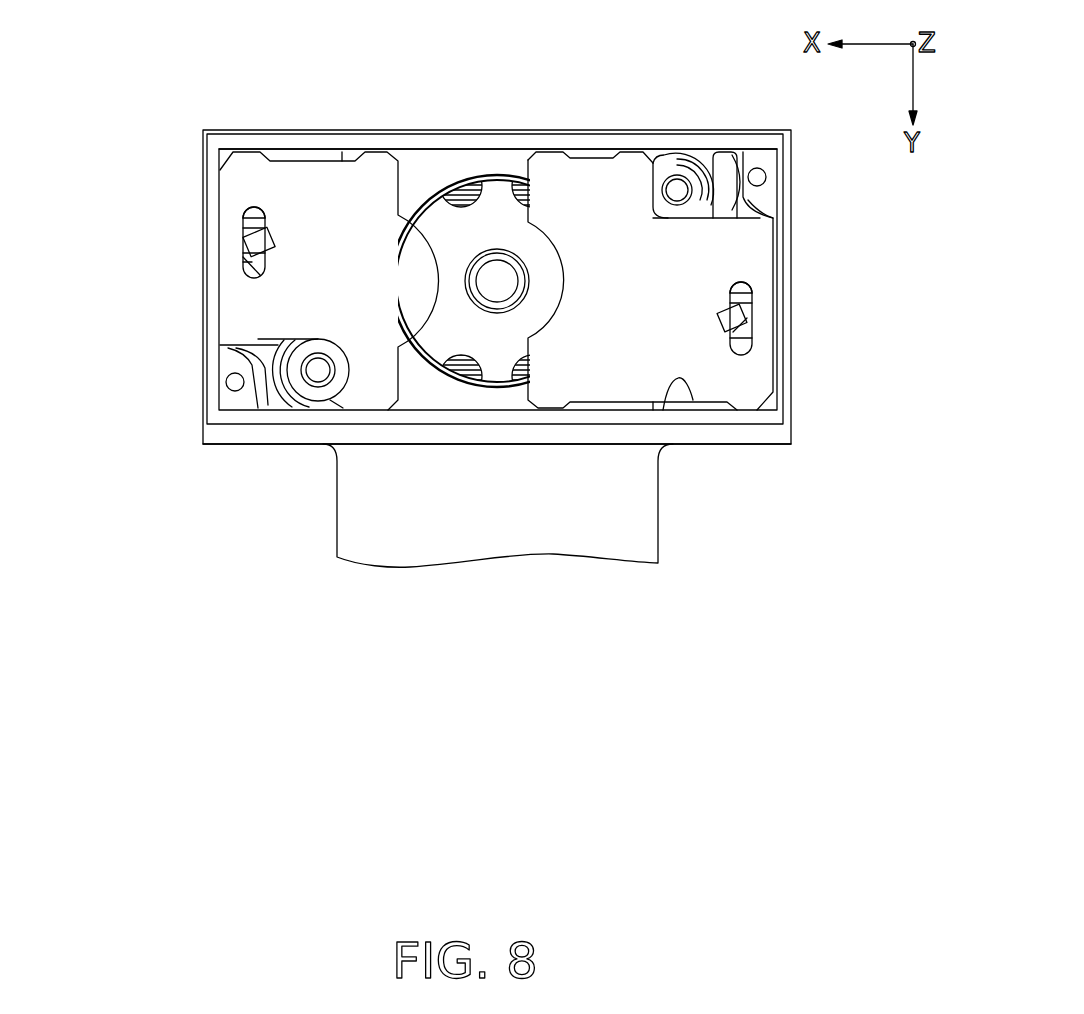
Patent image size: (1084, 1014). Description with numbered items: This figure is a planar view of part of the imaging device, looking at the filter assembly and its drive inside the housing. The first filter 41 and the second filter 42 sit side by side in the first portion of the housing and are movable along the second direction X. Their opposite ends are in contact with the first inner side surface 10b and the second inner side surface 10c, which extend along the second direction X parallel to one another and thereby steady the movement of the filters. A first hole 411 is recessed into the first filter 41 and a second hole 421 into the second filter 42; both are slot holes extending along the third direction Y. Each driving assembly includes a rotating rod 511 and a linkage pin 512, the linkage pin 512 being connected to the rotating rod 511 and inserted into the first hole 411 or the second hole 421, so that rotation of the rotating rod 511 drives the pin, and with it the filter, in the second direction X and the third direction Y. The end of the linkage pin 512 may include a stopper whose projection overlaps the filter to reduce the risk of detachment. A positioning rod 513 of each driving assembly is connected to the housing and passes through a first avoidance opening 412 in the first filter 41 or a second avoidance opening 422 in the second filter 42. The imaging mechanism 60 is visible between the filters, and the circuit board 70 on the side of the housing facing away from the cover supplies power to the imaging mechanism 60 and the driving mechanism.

The first inner side surface 10b is at (478, 149).
The second inner side surface 10c is at (693, 400).
The first filter 41 is at (762, 243).
The first hole 411 is at (764, 292).
The first avoidance opening 412 is at (730, 200).
The second filter 42 is at (232, 188).
The second hole 421 is at (231, 218).
The second avoidance opening 422 is at (246, 347).
The rotating rod 511 is at (245, 267).
The linkage pin 512 is at (250, 245).
The positioning rod 513 is at (308, 367).
The imaging mechanism 60 is at (445, 214).
The circuit board 70 is at (277, 436).